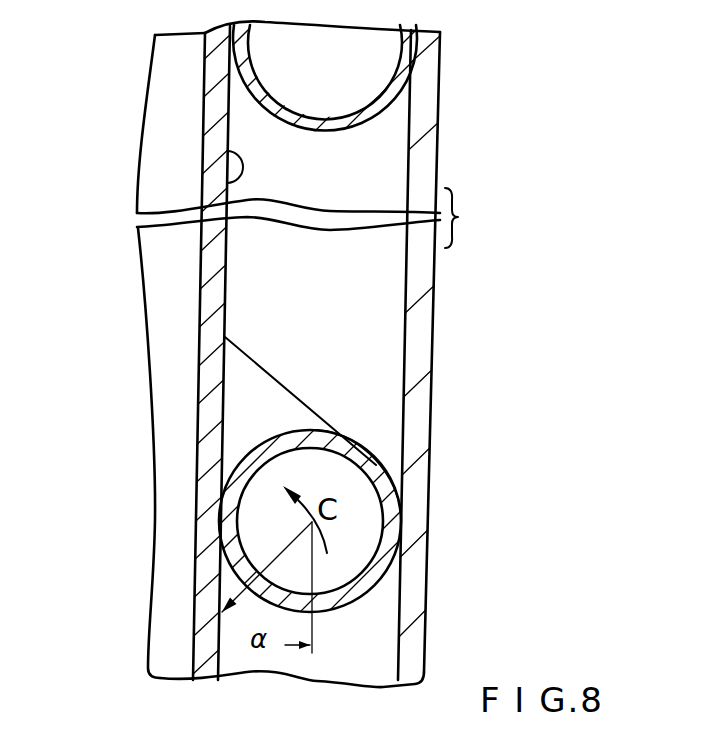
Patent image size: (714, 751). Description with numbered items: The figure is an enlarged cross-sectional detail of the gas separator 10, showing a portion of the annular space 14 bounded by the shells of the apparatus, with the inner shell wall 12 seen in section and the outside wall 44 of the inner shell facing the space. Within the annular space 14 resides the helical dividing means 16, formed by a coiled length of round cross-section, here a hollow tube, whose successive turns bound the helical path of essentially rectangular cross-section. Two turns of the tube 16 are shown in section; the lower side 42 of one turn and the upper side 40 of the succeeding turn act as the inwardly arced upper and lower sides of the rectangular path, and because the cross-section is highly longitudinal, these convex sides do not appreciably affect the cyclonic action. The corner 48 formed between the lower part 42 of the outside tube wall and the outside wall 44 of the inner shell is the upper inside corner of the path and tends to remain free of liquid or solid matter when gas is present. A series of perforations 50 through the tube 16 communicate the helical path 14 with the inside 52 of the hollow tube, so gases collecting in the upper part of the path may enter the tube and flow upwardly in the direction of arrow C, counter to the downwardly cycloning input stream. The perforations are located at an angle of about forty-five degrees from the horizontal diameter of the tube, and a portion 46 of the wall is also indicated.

The assembly 10 is at (210, 330).
The tubular housing wall 12 is at (415, 632).
The annular space 14 is at (353, 370).
The helical dividing means 16 is at (390, 575).
The upper side of tube 40 is at (313, 430).
The lower side of tube 42 is at (345, 130).
The outside wall of inner shell 44 is at (203, 148).
The housing section 46 is at (405, 283).
The corner 48 is at (222, 575).
The perforations 50 is at (220, 584).
The inside of hollow tube 52 is at (311, 463).